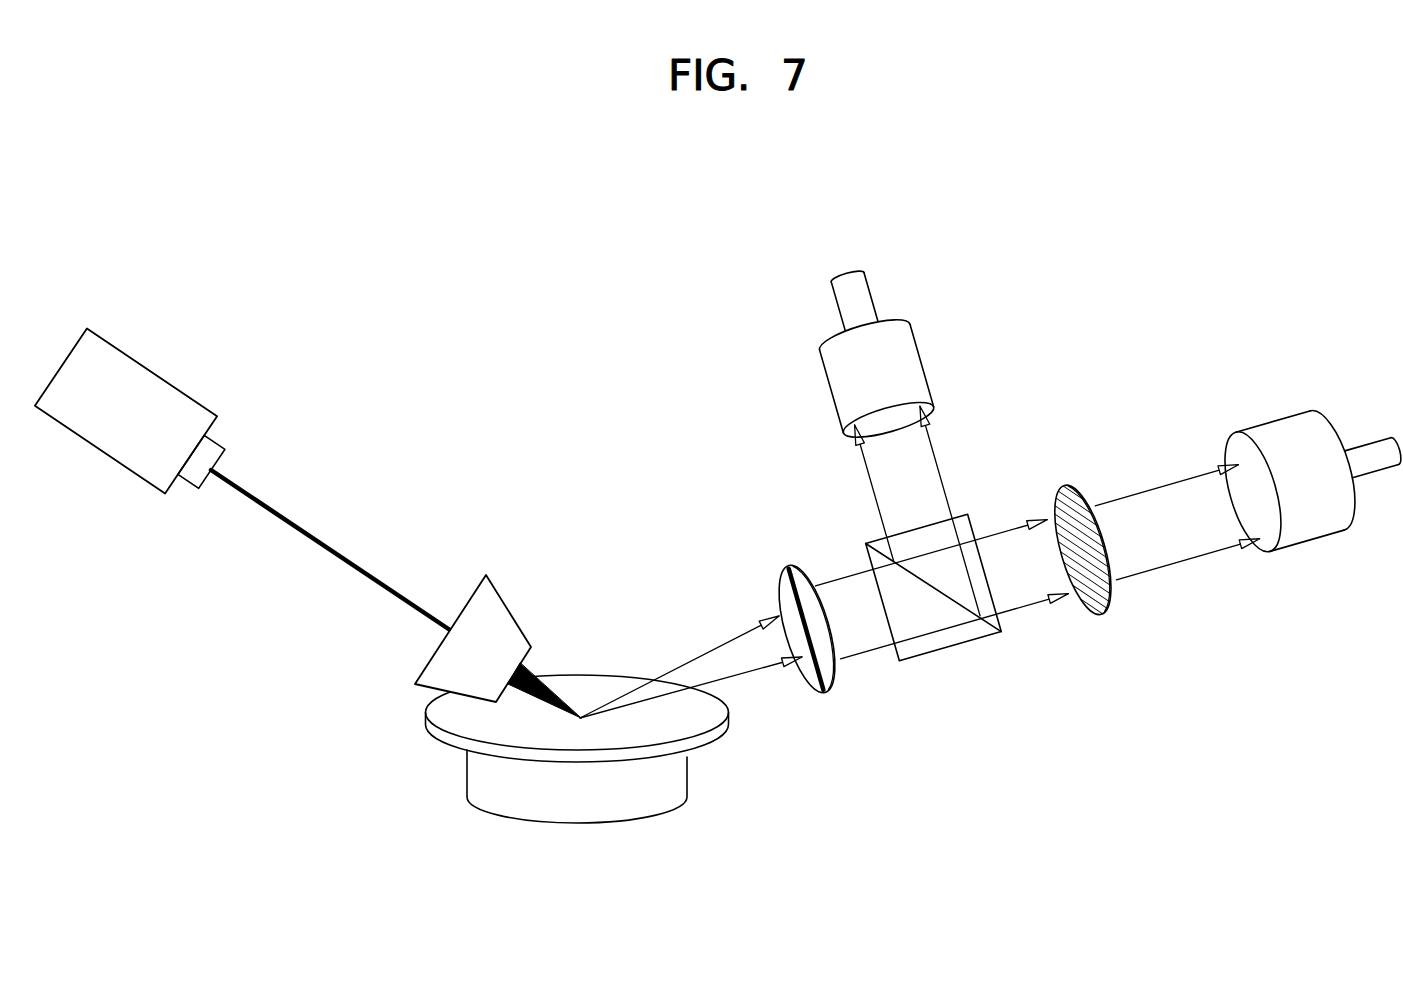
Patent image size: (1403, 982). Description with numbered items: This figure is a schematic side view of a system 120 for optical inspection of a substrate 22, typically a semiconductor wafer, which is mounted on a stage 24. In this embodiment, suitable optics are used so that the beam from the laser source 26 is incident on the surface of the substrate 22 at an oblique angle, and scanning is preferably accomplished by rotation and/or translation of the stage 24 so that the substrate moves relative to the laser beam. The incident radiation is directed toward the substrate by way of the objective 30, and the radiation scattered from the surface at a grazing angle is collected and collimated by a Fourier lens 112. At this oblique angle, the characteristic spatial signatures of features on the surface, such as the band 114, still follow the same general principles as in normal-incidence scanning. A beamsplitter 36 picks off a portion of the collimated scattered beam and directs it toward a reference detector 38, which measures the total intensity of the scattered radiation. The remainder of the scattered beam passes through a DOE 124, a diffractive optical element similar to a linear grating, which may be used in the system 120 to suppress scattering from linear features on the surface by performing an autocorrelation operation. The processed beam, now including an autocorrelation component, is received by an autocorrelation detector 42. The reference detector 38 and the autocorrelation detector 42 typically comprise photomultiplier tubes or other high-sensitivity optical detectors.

The system 120 is at (1217, 255).
The laser source 26 is at (163, 380).
The objective 30 is at (515, 607).
The substrate 22 is at (425, 722).
The stage 24 is at (467, 762).
The Fourier lens 112 is at (806, 567).
The band 114 is at (818, 687).
The beamsplitter 36 is at (938, 655).
The reference detector 38 is at (917, 342).
The DOE 124 is at (1063, 483).
The autocorrelation detector 42 is at (1268, 421).